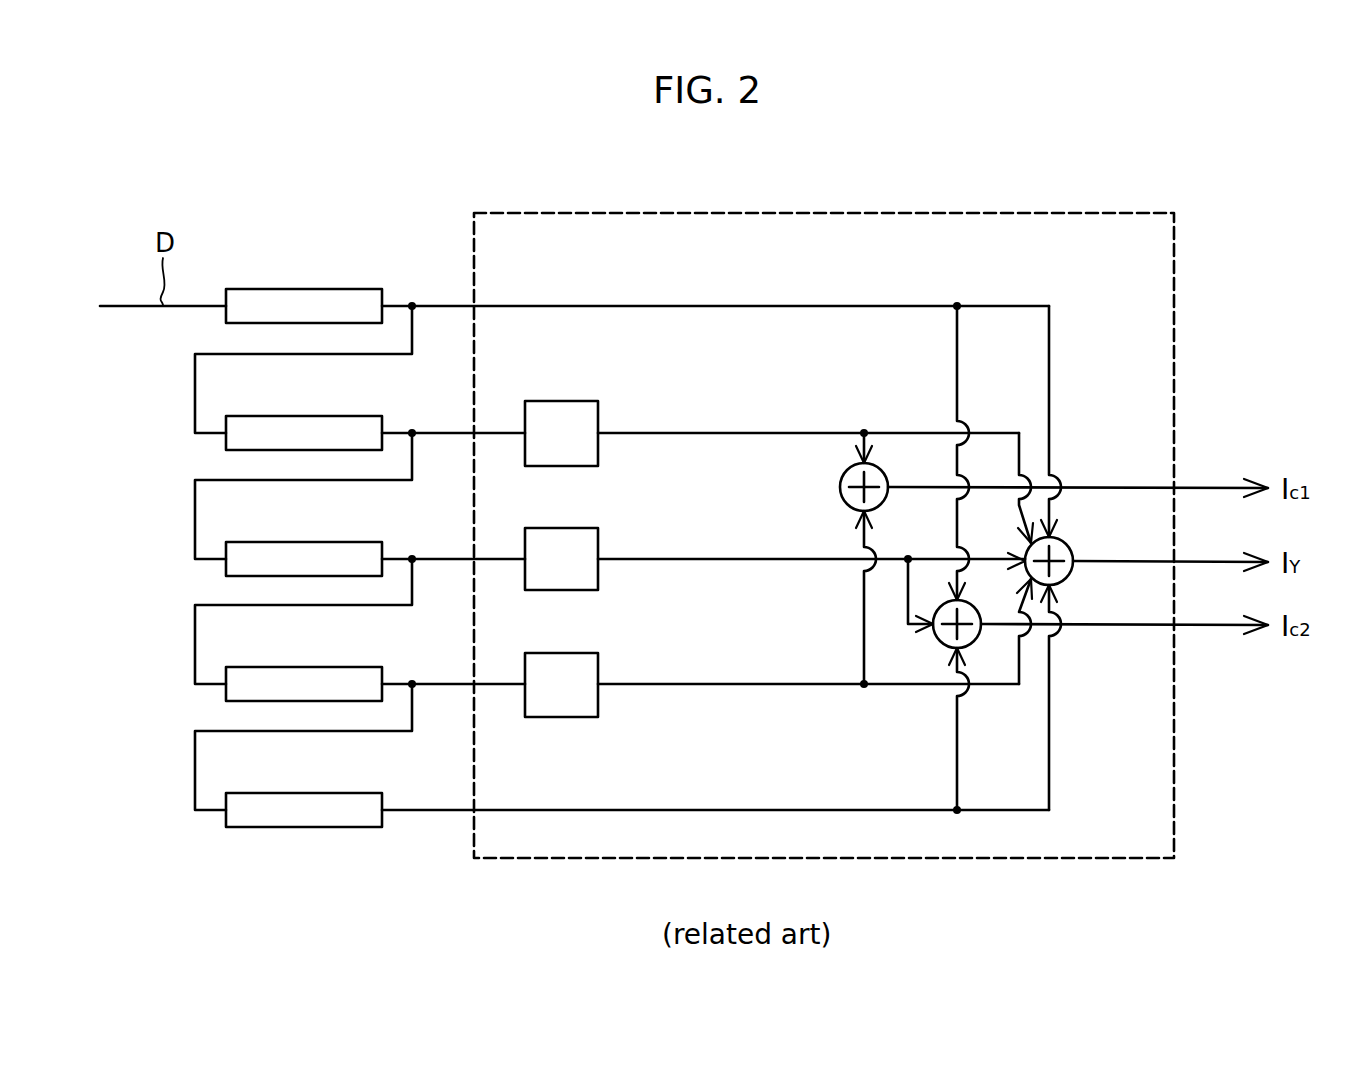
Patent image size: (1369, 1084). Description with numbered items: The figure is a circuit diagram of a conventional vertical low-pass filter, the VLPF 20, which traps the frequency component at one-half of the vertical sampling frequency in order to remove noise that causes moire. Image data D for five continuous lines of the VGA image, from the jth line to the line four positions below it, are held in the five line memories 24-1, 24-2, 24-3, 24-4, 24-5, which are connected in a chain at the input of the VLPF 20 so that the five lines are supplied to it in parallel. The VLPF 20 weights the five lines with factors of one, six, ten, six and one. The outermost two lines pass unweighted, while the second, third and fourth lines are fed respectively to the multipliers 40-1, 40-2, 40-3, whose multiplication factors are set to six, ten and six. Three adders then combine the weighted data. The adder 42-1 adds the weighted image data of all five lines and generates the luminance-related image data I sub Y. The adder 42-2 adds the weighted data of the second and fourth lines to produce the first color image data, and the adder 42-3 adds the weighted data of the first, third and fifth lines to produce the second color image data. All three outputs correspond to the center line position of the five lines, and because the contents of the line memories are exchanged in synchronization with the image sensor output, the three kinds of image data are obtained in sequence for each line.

The VLPF 20 is at (1174, 369).
The line memory 24-1 is at (345, 289).
The line memory 24-2 is at (345, 416).
The line memory 24-3 is at (345, 542).
The line memory 24-4 is at (345, 667).
The line memory 24-5 is at (345, 793).
The multiplier 40-1 is at (598, 410).
The multiplier 40-2 is at (598, 537).
The multiplier 40-3 is at (598, 662).
The adder 42-1 is at (1104, 539).
The adder 42-2 is at (844, 501).
The adder 42-3 is at (937, 636).